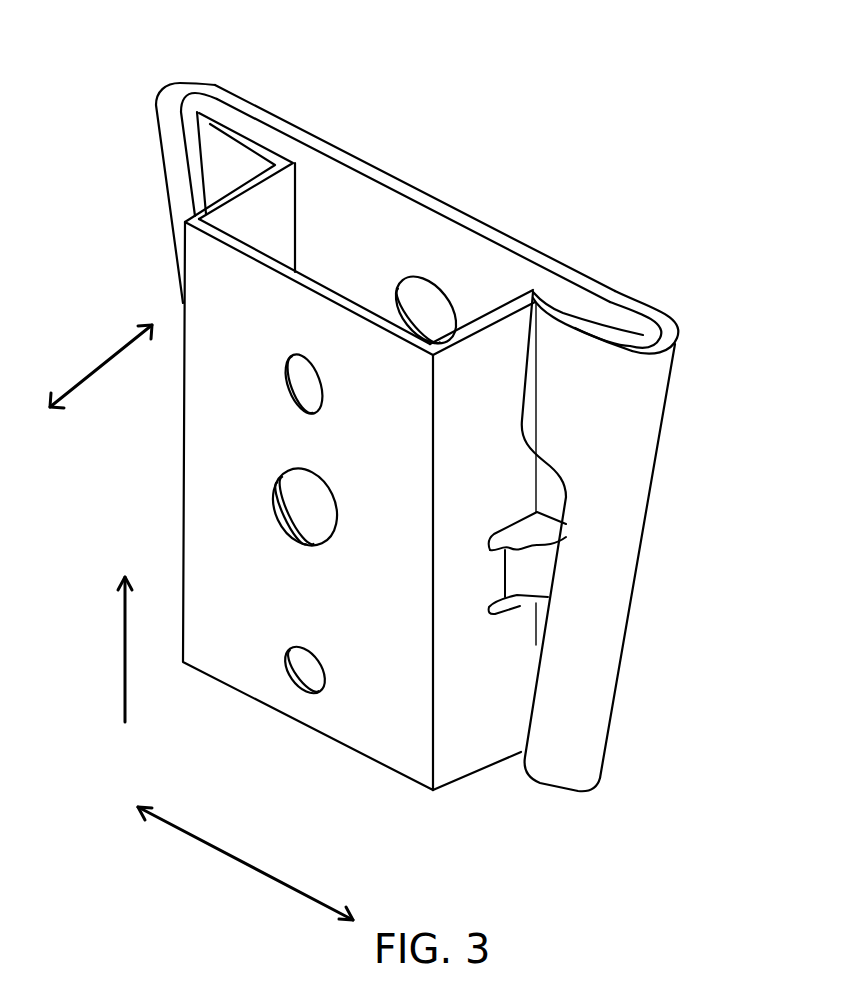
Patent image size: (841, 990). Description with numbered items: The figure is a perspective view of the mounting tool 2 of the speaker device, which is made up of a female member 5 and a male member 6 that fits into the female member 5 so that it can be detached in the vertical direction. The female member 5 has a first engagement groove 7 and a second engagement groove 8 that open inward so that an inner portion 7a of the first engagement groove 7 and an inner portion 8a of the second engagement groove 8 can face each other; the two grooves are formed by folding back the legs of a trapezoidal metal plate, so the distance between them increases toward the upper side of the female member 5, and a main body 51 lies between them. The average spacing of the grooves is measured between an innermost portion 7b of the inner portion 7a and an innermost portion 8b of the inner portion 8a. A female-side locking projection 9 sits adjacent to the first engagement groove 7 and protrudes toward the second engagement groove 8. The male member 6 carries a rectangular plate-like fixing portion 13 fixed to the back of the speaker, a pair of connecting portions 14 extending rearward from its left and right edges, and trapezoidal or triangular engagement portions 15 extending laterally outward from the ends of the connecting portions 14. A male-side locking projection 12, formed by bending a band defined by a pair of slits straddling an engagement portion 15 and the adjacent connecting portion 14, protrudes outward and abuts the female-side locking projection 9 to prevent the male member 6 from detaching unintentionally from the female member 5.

The mounting tool 2 is at (605, 128).
The female member 5 is at (405, 172).
The main body 51 is at (417, 240).
The male member 6 is at (183, 445).
The first engagement groove 7 is at (600, 582).
The inner portion 7a is at (623, 325).
The innermost portion 7b is at (633, 323).
The second engagement groove 8 is at (168, 157).
The inner portion 8a is at (205, 103).
The innermost portion 8b is at (180, 100).
The female-side locking projection 9 is at (548, 408).
The male-side locking projection 12 is at (553, 498).
The fixing portion 13 is at (250, 618).
The connecting portions 14 is at (268, 208).
The engagement portions 15 is at (228, 167).